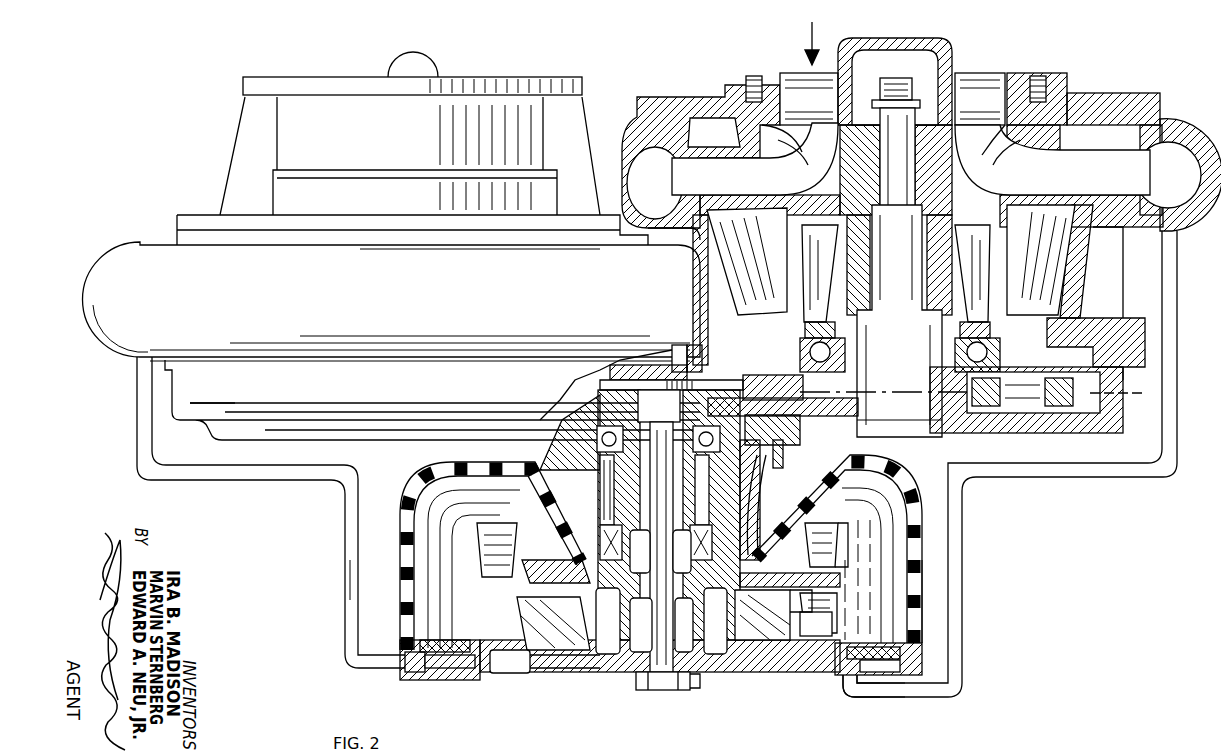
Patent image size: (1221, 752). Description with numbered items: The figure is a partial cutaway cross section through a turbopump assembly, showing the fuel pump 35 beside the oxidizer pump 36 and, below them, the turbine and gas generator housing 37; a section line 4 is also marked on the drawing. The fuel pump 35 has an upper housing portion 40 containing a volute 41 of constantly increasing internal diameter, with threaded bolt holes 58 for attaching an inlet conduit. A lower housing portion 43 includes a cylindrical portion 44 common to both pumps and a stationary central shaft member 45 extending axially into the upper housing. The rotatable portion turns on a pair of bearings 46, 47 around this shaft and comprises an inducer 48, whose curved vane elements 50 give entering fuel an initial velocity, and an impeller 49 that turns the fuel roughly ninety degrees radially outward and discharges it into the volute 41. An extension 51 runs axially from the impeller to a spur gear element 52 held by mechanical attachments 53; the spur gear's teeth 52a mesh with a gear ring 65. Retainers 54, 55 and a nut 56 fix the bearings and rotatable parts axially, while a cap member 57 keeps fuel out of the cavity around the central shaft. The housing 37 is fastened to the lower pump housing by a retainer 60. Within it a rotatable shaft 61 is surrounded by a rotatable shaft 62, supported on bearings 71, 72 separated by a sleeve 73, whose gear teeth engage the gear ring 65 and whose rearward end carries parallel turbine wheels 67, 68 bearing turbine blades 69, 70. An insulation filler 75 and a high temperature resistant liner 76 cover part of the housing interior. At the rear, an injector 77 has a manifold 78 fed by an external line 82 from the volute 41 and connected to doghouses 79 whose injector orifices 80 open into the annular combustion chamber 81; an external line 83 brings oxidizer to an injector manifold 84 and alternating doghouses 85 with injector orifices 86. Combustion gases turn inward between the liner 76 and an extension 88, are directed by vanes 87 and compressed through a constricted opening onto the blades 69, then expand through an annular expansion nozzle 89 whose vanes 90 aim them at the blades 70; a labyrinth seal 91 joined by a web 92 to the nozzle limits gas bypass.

The section line 4- 4 is at (214, 412).
The fuel pump 35 is at (1010, 65).
The oxidizer pump 36 is at (500, 77).
The turbine and gas generator housing 37 is at (918, 525).
The upper housing portion 40 is at (1166, 92).
The volute 41 is at (1192, 136).
The lower housing portion 43 is at (1002, 428).
The cylindrical portion 44 is at (783, 450).
The stationary central shaft member 45 is at (946, 355).
The bearing 46 is at (1072, 205).
The bearing 47 is at (900, 332).
The inducer 48 is at (796, 108).
The impeller 49 is at (740, 181).
The curved vane elements 50 is at (784, 127).
The extension 51 is at (891, 260).
The spur gear element 52 is at (772, 430).
The teeth 52a is at (745, 350).
The mechanical attachments 53 is at (783, 408).
The retainer 54 is at (958, 265).
The retainer 55 is at (896, 161).
The nut 56 is at (912, 92).
The cap member 57 is at (922, 42).
The threaded bolt holes 58 is at (1042, 74).
The retainer 60 is at (774, 505).
The rotatable shaft 61 is at (668, 540).
The rotatable shaft 62 is at (700, 540).
The gear ring 65 is at (701, 382).
The turbine wheel 67 is at (553, 622).
The turbine wheel 68 is at (588, 664).
The turbine blades 69 is at (485, 568).
The turbine blades 70 is at (510, 661).
The bearing 71 is at (596, 440).
The bearing 72 is at (624, 571).
The sleeve 73 is at (600, 472).
The insulation filler 75 is at (886, 472).
The high temperature resistant liner 76 is at (882, 494).
The injector 77 is at (912, 664).
The manifold 78 is at (850, 675).
The doghouses 79 is at (888, 697).
The injector orifices 80 is at (880, 648).
The combustion chamber 81 is at (867, 571).
The external line 82 is at (962, 560).
The external line 83 is at (345, 592).
The injector manifold 84 is at (418, 672).
The doghouses 85 is at (444, 668).
The injector orifices 86 is at (437, 648).
The vanes 87 is at (821, 545).
The extension 88 is at (838, 525).
The annular expansion nozzle 89 is at (840, 602).
The vanes 90 is at (816, 624).
The labyrinth seal 91 is at (735, 640).
The web 92 is at (785, 640).